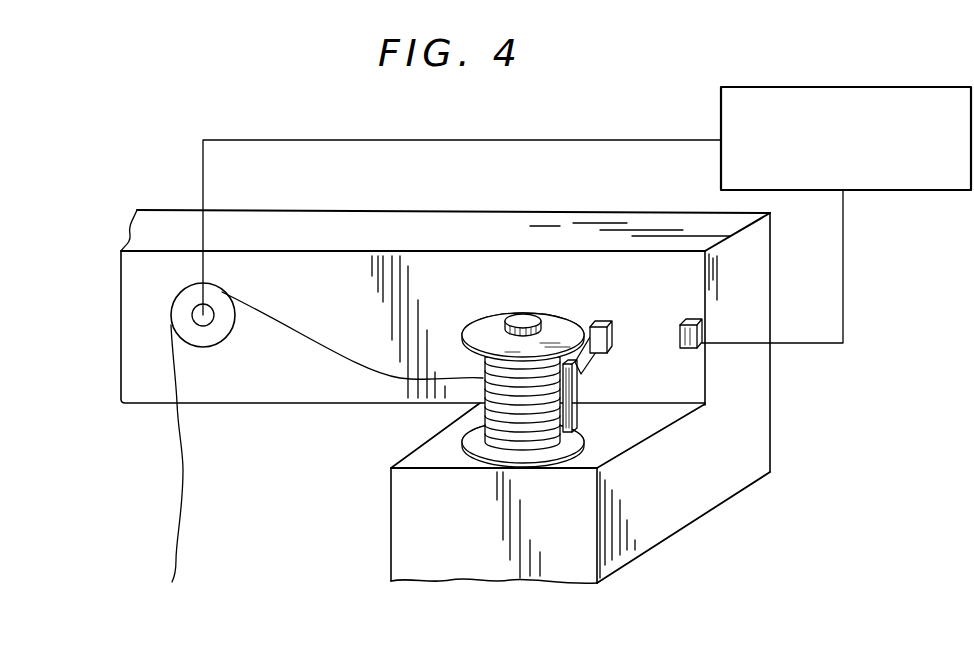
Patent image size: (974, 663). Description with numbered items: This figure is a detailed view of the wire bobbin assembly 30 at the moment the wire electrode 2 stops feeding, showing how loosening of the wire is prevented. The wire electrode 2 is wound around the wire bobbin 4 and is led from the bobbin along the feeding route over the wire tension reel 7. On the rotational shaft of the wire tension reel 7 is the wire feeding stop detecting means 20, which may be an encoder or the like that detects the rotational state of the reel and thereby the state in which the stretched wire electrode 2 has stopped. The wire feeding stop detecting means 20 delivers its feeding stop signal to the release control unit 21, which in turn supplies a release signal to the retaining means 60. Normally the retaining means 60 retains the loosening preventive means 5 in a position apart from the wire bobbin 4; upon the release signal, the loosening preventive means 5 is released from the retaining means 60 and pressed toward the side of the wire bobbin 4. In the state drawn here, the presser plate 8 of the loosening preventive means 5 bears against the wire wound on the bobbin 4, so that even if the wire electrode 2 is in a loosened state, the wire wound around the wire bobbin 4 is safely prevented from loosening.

The wire electrode 2 is at (532, 438).
The wire bobbin 4 is at (563, 318).
The loosening preventive means 5 is at (598, 372).
The wire tension reel 7 is at (170, 305).
The presser plate 8 is at (583, 410).
The wire feeding stop detecting means 20 is at (213, 325).
The release control unit 21 is at (900, 190).
The wire bobbin assembly 30 is at (783, 390).
The retaining means 60 is at (703, 333).